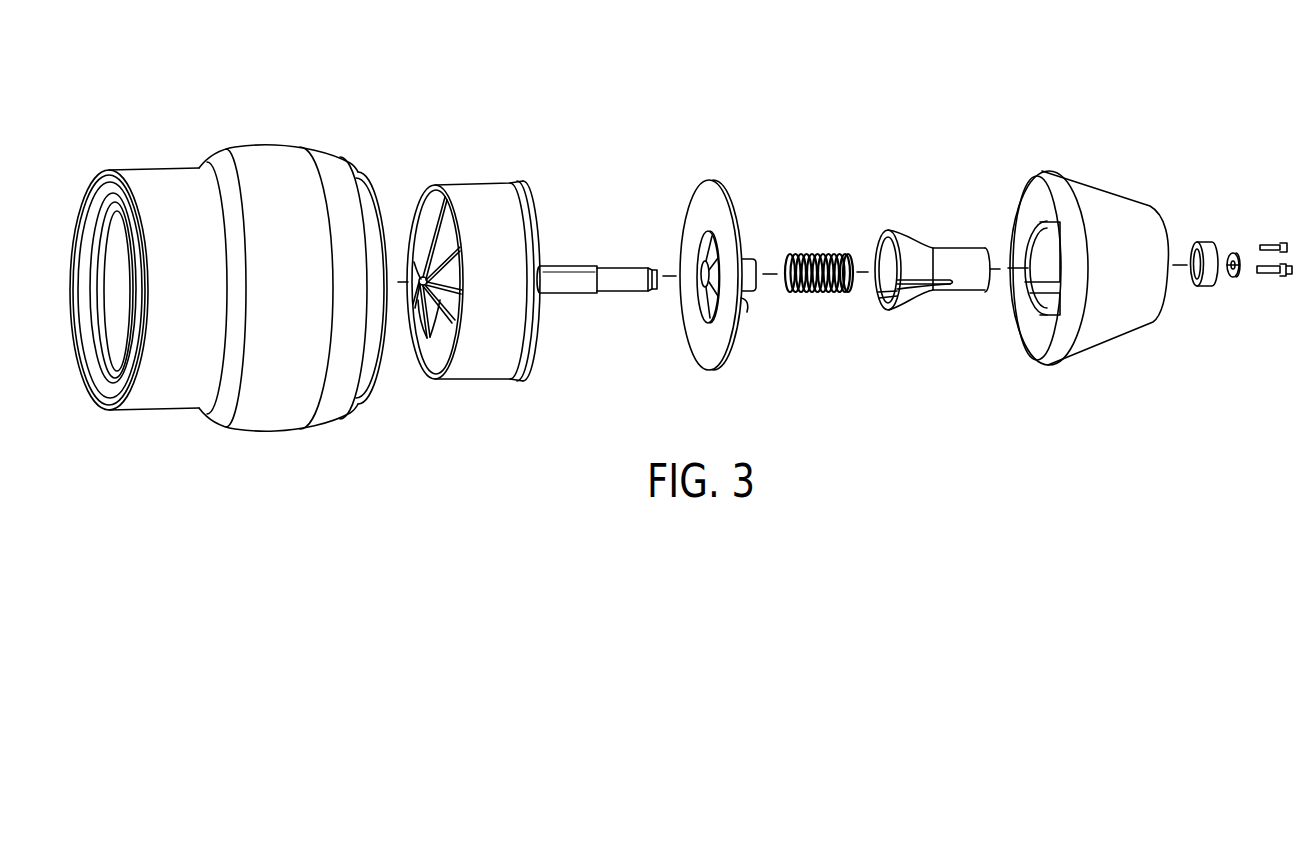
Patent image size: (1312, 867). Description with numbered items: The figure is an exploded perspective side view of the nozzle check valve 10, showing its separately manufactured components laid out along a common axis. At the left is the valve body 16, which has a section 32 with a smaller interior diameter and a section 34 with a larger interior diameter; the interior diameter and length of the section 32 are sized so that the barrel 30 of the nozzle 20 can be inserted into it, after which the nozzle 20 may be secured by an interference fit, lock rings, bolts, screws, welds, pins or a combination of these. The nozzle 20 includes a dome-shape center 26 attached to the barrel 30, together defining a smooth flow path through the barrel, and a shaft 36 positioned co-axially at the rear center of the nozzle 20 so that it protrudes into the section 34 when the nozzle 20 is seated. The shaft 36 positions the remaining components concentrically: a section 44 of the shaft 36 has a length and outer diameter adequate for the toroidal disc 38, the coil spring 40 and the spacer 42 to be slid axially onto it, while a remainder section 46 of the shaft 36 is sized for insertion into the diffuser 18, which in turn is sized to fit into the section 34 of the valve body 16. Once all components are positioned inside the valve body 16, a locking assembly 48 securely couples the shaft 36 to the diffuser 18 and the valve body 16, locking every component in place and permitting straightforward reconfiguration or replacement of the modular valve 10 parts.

The nozzle check valve 10 is at (754, 120).
The valve body 16 is at (270, 157).
The diffuser 18 is at (1105, 182).
The nozzle 20 is at (472, 188).
The dome-shape center 26 is at (421, 280).
The barrel 30 is at (502, 280).
The section 32 is at (207, 438).
The section 34 is at (367, 435).
The shaft 36 is at (567, 263).
The toroidal disc 38 is at (707, 198).
The coil spring 40 is at (817, 255).
The spacer 42 is at (913, 240).
The section of the shaft 44 is at (596, 297).
The remainder section of the shaft 46 is at (657, 297).
The locking assembly 48 is at (1283, 227).